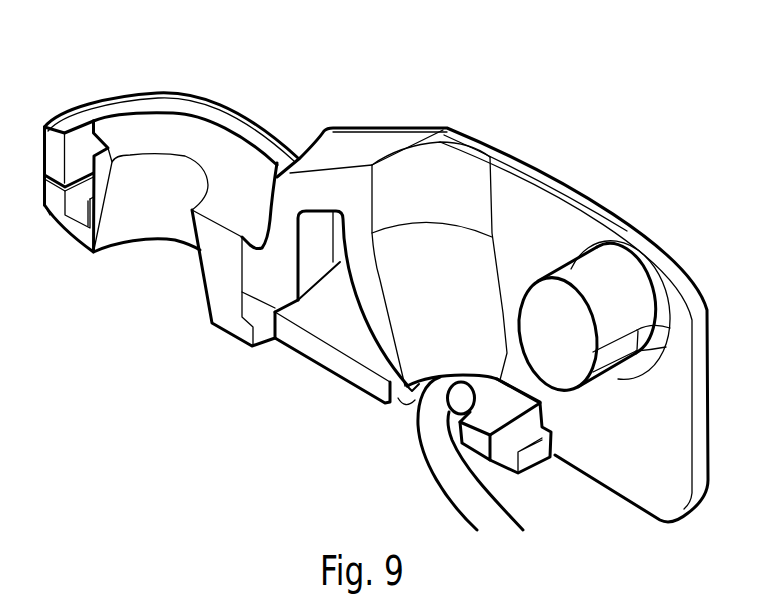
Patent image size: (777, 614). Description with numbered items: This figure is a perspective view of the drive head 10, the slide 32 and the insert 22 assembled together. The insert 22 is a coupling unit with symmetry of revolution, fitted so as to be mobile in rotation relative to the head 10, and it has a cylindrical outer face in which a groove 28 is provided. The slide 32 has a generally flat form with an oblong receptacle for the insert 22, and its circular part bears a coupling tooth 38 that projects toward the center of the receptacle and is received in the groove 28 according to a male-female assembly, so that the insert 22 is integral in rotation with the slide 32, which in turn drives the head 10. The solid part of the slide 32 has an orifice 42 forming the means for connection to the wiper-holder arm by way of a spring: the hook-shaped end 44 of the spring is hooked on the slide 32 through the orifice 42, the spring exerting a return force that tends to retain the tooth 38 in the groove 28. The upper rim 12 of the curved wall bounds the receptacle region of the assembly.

The drive head 10 is at (379, 154).
The rim top face 12 is at (107, 105).
The insert 22 is at (159, 143).
The groove 28 is at (97, 152).
The coupling tooth 38 is at (70, 203).
The slide 32 is at (331, 355).
The orifice 42 is at (410, 407).
The end of the spring 44 is at (482, 508).